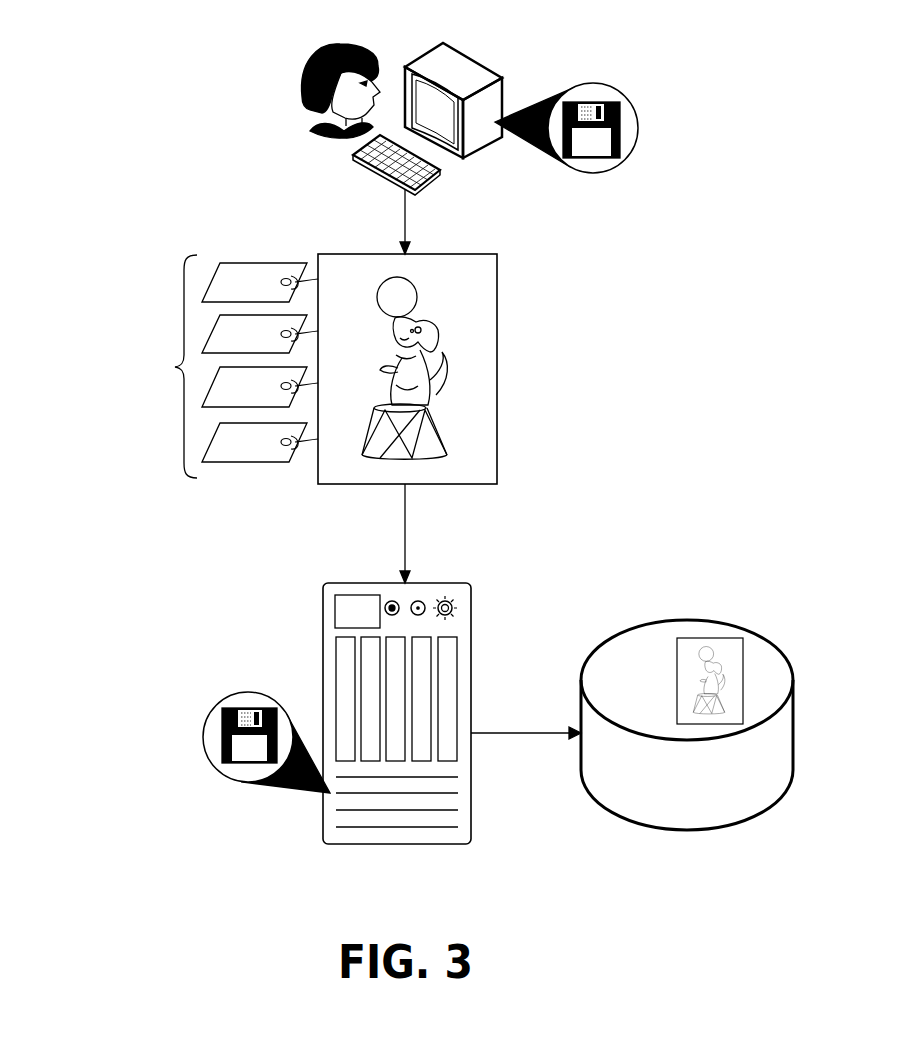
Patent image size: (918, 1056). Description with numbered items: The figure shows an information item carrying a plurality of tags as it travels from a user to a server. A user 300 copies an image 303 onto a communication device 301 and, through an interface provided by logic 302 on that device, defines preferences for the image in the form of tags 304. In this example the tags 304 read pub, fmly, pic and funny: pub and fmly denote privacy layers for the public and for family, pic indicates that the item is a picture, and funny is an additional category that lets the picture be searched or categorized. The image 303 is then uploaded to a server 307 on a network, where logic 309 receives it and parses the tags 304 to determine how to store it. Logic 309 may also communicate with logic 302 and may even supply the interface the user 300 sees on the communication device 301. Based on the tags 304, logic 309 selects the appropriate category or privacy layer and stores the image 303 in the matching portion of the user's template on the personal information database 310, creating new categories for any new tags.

The user 300 is at (327, 48).
The communication device 301 is at (432, 50).
The logic 302 is at (613, 103).
The image 303 is at (500, 320).
The tags 304 is at (173, 363).
The server 307 is at (323, 648).
The logic 309 is at (232, 763).
The personal information database 310 is at (650, 620).